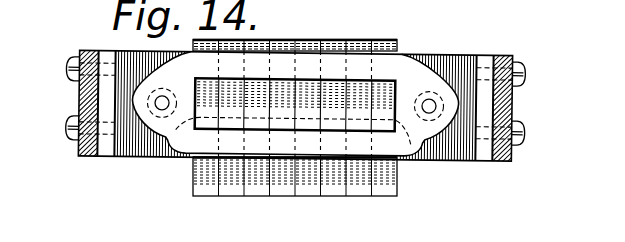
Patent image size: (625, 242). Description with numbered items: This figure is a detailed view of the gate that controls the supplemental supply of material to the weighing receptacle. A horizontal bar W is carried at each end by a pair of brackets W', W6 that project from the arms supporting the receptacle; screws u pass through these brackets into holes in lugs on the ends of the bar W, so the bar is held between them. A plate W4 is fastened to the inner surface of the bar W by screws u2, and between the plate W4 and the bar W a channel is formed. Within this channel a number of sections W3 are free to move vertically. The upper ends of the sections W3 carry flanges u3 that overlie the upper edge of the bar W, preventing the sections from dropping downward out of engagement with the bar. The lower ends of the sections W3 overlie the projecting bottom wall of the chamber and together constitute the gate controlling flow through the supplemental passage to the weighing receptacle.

The bar W is at (295, 129).
The bracket W' is at (100, 81).
The bracket W6 is at (513, 55).
The screw u is at (63, 115).
The flange u3 is at (190, 52).
The screw u2 is at (452, 39).
The plate W4 is at (332, 60).
The section W3 is at (330, 188).